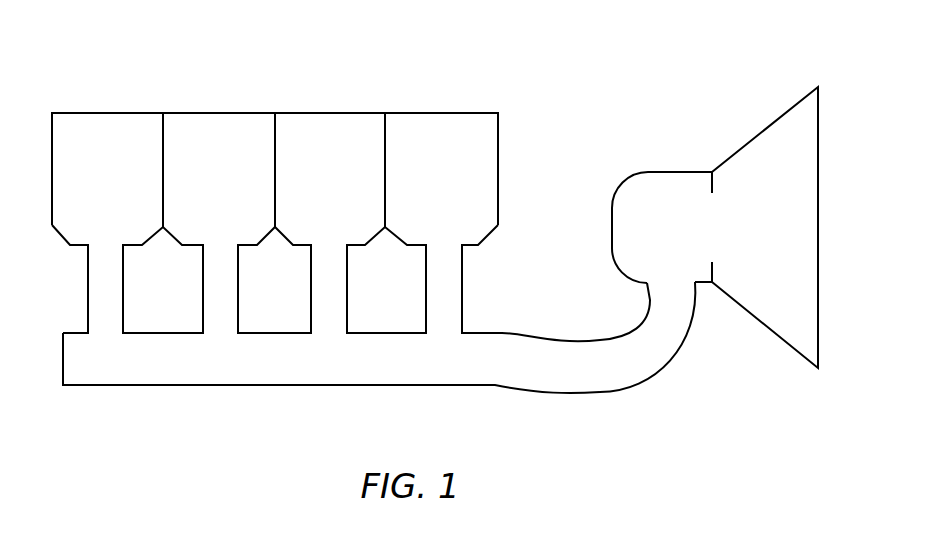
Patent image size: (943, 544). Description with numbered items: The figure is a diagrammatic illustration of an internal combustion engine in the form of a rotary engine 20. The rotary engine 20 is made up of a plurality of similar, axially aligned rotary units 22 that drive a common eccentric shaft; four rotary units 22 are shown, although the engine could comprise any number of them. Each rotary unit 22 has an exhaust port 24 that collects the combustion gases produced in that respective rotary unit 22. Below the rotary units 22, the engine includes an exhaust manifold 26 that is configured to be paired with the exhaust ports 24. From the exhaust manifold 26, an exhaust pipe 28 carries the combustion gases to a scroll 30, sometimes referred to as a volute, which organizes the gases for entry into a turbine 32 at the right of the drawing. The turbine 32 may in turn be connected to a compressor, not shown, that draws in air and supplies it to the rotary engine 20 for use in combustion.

The rotary engine 20 is at (564, 83).
The rotary units 22 is at (203, 133).
The exhaust port 24 is at (222, 245).
The exhaust manifold 26 is at (275, 367).
The exhaust pipe 28 is at (625, 367).
The scroll 30 is at (655, 243).
The turbine 32 is at (759, 243).